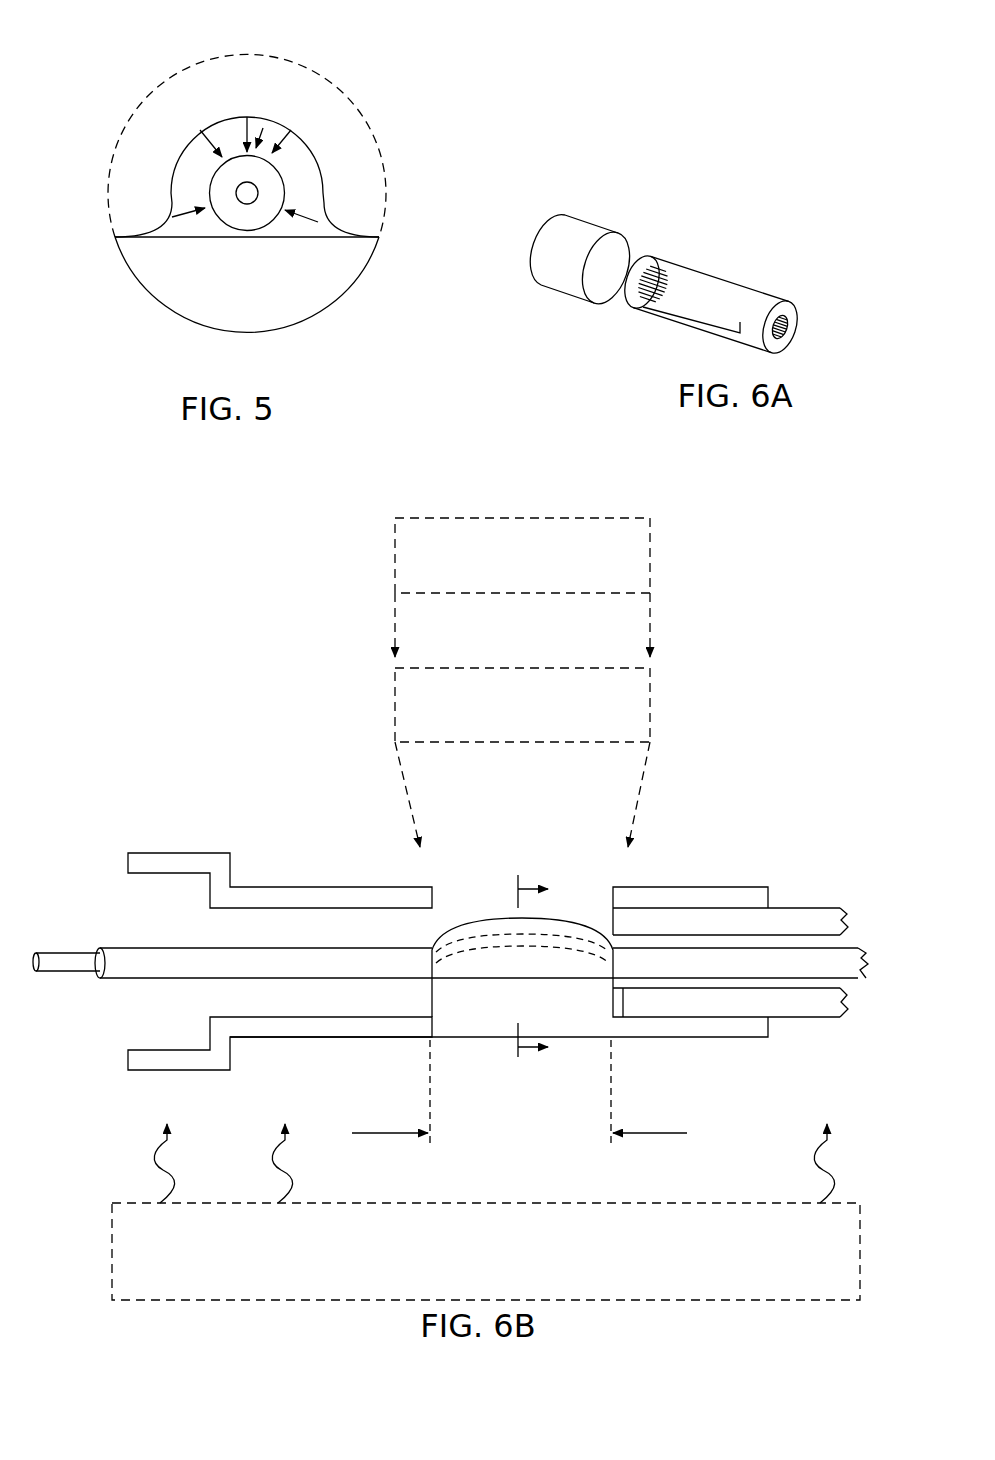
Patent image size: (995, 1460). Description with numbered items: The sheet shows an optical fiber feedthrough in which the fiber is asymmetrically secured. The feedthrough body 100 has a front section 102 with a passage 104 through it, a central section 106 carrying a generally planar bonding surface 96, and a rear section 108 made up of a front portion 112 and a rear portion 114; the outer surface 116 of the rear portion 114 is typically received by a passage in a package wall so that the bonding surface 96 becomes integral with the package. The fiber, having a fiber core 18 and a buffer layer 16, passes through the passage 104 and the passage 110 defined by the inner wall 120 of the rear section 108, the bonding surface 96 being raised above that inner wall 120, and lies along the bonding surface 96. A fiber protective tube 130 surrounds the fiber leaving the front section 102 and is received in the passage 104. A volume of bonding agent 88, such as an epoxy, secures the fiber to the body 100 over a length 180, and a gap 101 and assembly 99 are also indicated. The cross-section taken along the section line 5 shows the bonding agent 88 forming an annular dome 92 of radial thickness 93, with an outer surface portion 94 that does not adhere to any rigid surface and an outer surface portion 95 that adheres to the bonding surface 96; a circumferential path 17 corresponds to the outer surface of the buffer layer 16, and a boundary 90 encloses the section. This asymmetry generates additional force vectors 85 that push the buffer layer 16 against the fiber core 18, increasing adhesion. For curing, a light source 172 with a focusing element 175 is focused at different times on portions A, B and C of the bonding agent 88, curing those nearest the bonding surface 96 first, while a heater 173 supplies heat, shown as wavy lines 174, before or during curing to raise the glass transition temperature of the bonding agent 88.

In FIG. 5, the buffer layer 16 is at (252, 217).
In FIG. 6B, the buffer layer 16 is at (842, 963).
In FIG. 6B, the circumferential path 17 is at (850, 948).
In FIG. 5, the fiber core 18 is at (247, 193).
In FIG. 6B, the fiber core 18 is at (60, 963).
In FIG. 5, the force vectors 85 is at (287, 140).
In FIG. 5, the volume of bonding agent 88 is at (328, 233).
In FIG. 6B, the volume of bonding agent 88 is at (463, 912).
In FIG. 5, the cross-section boundary 90 is at (358, 80).
In FIG. 5, the annular dome 92 is at (217, 117).
In FIG. 5, the radial thickness 93 is at (262, 136).
In FIG. 5, the outer surface portion 94 is at (178, 158).
In FIG. 5, the outer surface portion 95 is at (213, 242).
In FIG. 5, the bonding surface 96 is at (155, 233).
In FIG. 6A, the bonding surface 96 is at (702, 297).
In FIG. 6B, the bonding surface 96 is at (465, 978).
In FIG. 6B, the assembly process 99 is at (257, 708).
In FIG. 5, the feedthrough body 100 is at (220, 302).
In FIG. 6A, the feedthrough body 100 is at (733, 212).
In FIG. 6B, the gap 101 is at (620, 983).
In FIG. 6A, the front section 102 is at (770, 305).
In FIG. 6B, the front section 102 is at (683, 900).
In FIG. 6A, the passage 104 is at (795, 325).
In FIG. 6A, the central section 106 is at (692, 327).
In FIG. 6B, the central section 106 is at (567, 1018).
In FIG. 6A, the rear section 108 is at (576, 237).
In FIG. 6B, the rear section 108 is at (266, 945).
In FIG. 6A, the passage 110 is at (645, 303).
In FIG. 6A, the front portion 112 is at (640, 248).
In FIG. 6B, the front portion 112 is at (357, 1028).
In FIG. 6A, the rear portion 114 is at (570, 293).
In FIG. 6B, the rear portion 114 is at (165, 1047).
In FIG. 6A, the outer surface 116 is at (558, 253).
In FIG. 6B, the outer surface 116 is at (187, 852).
In FIG. 6B, the inner wall 120 is at (313, 1013).
In FIG. 6B, the fiber protective tube 130 is at (797, 920).
In FIG. 6B, the light source 172 is at (453, 518).
In FIG. 6B, the heater 173 is at (413, 1203).
In FIG. 6B, the wavy lines 174 is at (273, 1172).
In FIG. 6B, the focusing element 175 is at (487, 668).
In FIG. 6B, the length 180 is at (638, 1133).
In FIG. 6B, the section line 5 is at (522, 970).